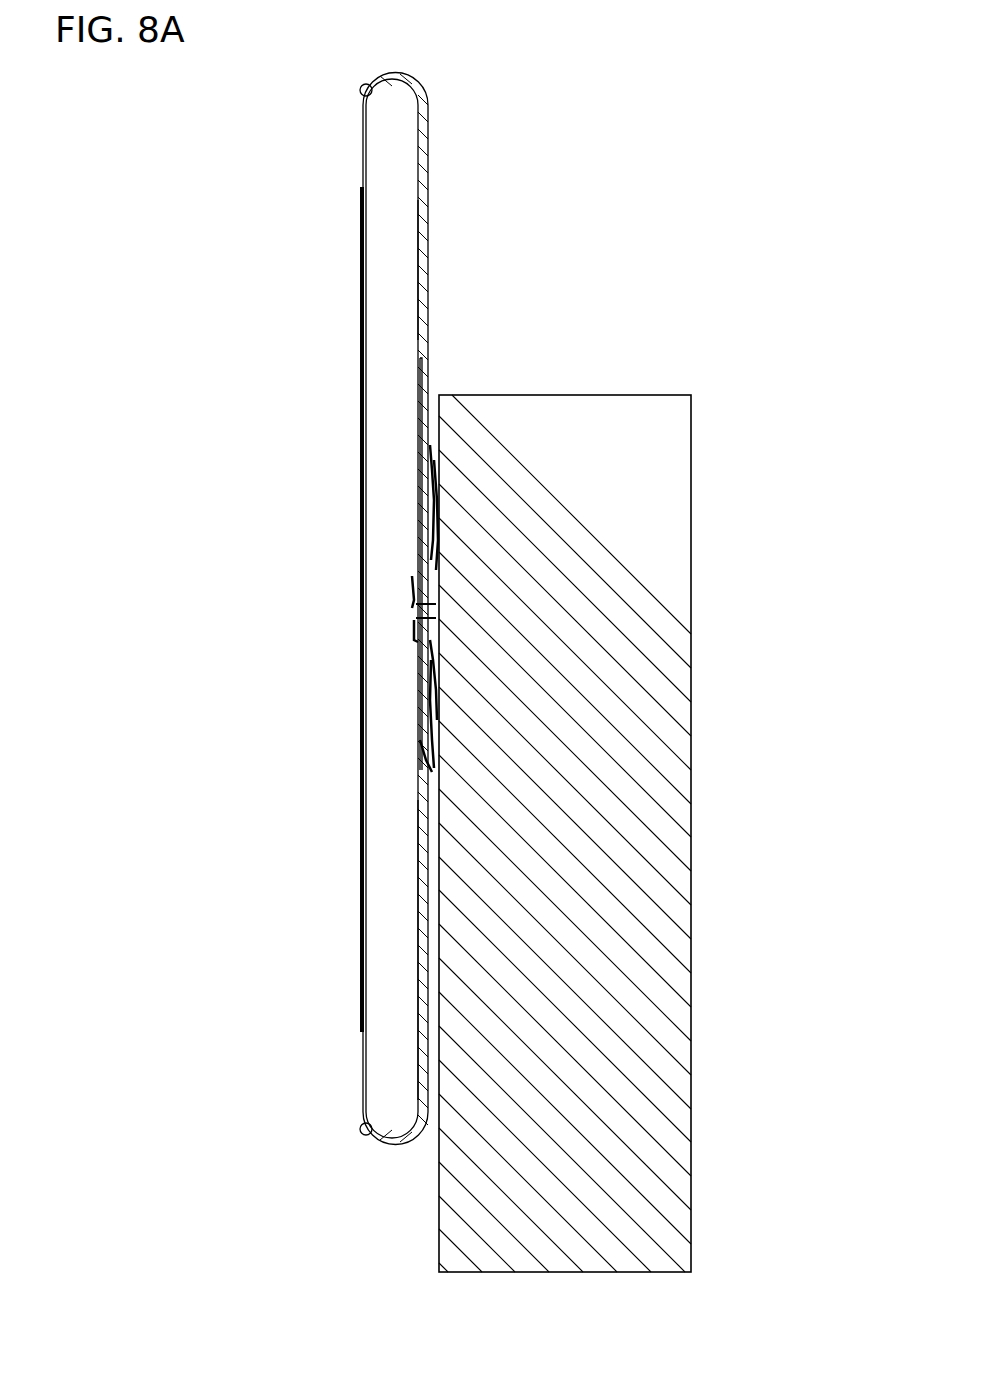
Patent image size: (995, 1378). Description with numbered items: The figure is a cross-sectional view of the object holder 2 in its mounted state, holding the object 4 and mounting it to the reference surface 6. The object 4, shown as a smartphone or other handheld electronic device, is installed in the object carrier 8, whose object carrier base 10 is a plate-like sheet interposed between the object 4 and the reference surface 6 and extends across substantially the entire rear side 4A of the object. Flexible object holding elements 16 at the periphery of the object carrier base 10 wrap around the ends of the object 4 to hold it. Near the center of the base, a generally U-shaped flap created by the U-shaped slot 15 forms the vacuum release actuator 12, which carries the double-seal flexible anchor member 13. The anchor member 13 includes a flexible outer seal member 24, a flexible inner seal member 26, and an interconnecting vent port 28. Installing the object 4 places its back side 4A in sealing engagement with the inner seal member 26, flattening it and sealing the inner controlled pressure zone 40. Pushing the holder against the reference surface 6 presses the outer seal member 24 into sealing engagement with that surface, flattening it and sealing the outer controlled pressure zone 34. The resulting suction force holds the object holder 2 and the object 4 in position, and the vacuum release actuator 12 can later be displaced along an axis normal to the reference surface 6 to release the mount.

The object holder 2 is at (424, 66).
The object 4 is at (383, 276).
The rear side of the object 4A is at (418, 271).
The reference surface 6 is at (713, 430).
The object carrier 8 is at (433, 160).
The object carrier base 10 is at (408, 985).
The vacuum release actuator 12 is at (415, 744).
The double-seal flexible anchor member 13 is at (410, 652).
The U-shaped slot 15 is at (425, 755).
The object holding elements 16 is at (362, 84).
The outer seal member 24 is at (433, 470).
The inner seal member 26 is at (417, 600).
The vent port 28 is at (415, 612).
The outer controlled pressure zone 34 is at (437, 566).
The inner controlled pressure zone 40 is at (415, 626).